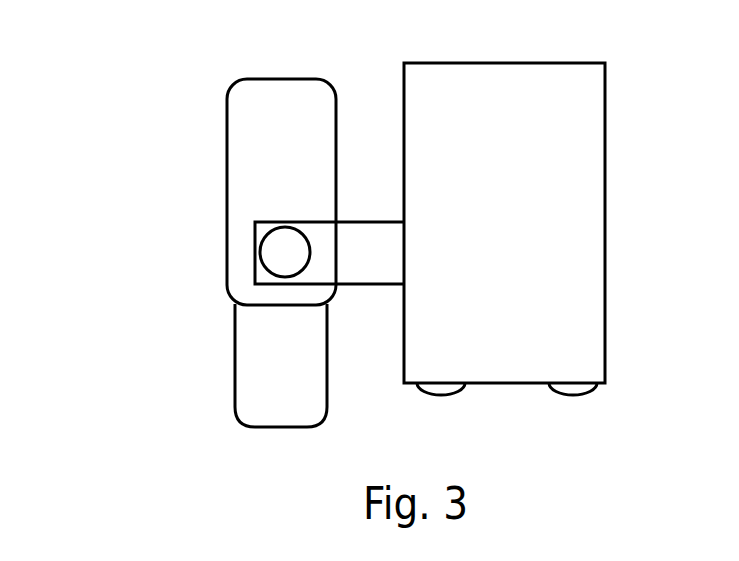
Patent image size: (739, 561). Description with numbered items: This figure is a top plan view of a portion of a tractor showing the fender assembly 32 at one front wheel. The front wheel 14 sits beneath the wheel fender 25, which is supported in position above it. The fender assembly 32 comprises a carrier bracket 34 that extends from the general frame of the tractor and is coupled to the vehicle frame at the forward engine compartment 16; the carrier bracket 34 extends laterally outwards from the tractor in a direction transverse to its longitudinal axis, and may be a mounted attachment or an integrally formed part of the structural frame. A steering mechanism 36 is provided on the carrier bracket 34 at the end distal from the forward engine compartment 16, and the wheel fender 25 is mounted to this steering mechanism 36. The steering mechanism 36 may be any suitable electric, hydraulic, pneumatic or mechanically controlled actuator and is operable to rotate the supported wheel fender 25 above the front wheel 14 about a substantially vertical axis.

The front wheel 14 is at (252, 408).
The forward engine compartment 16 is at (573, 265).
The wheel fender 25 is at (248, 182).
The fender assembly 32 is at (154, 135).
The carrier bracket 34 is at (372, 242).
The steering mechanism 36 is at (283, 258).